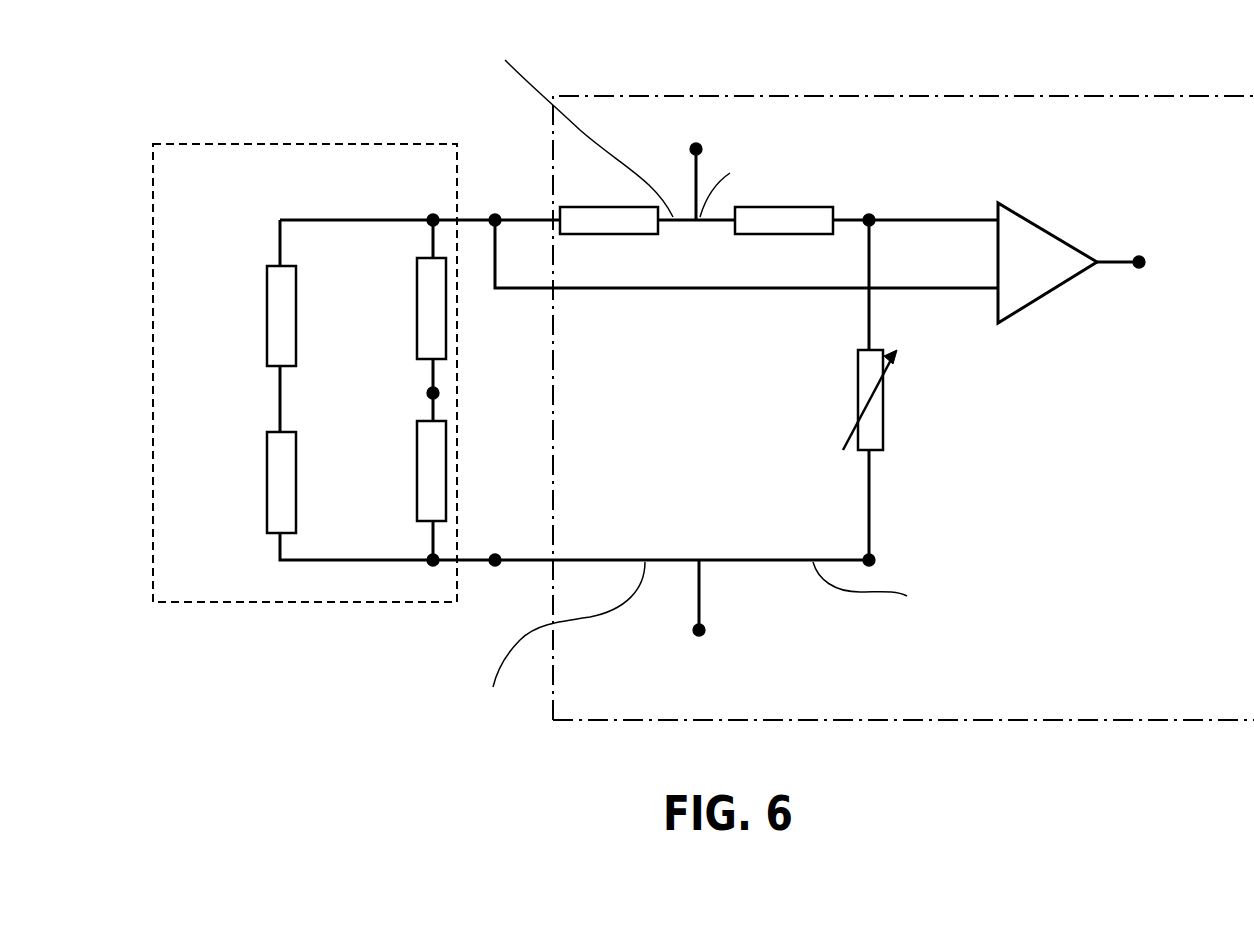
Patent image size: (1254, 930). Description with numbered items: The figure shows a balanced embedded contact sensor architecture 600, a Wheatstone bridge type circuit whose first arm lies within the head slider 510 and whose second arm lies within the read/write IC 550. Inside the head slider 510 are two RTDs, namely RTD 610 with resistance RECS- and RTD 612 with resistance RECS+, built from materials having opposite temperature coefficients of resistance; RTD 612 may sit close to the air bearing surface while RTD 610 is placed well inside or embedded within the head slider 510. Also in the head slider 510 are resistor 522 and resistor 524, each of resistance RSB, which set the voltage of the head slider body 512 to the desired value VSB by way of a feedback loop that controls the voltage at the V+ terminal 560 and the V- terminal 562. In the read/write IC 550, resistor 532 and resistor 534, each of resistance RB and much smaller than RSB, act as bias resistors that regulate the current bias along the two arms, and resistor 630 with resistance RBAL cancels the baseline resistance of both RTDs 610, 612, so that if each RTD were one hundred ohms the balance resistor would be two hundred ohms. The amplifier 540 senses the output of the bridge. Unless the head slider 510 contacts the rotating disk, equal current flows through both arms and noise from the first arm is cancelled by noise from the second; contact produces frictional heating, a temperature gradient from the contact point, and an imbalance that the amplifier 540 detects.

The head slider 510 is at (376, 144).
The head slider body 512 is at (440, 392).
The resistor 522 is at (417, 291).
The resistor 524 is at (417, 458).
The resistor 532 is at (603, 206).
The resistor 534 is at (835, 212).
The amplifier 540 is at (1040, 226).
The read/write IC 550 is at (1127, 72).
The V+ terminal 560 is at (690, 149).
The V- terminal 562 is at (706, 633).
The balanced embedded contact sensor architecture 600 is at (1012, 799).
The RTD 610 is at (267, 282).
The RTD 612 is at (267, 452).
The resistor 630 is at (883, 410).